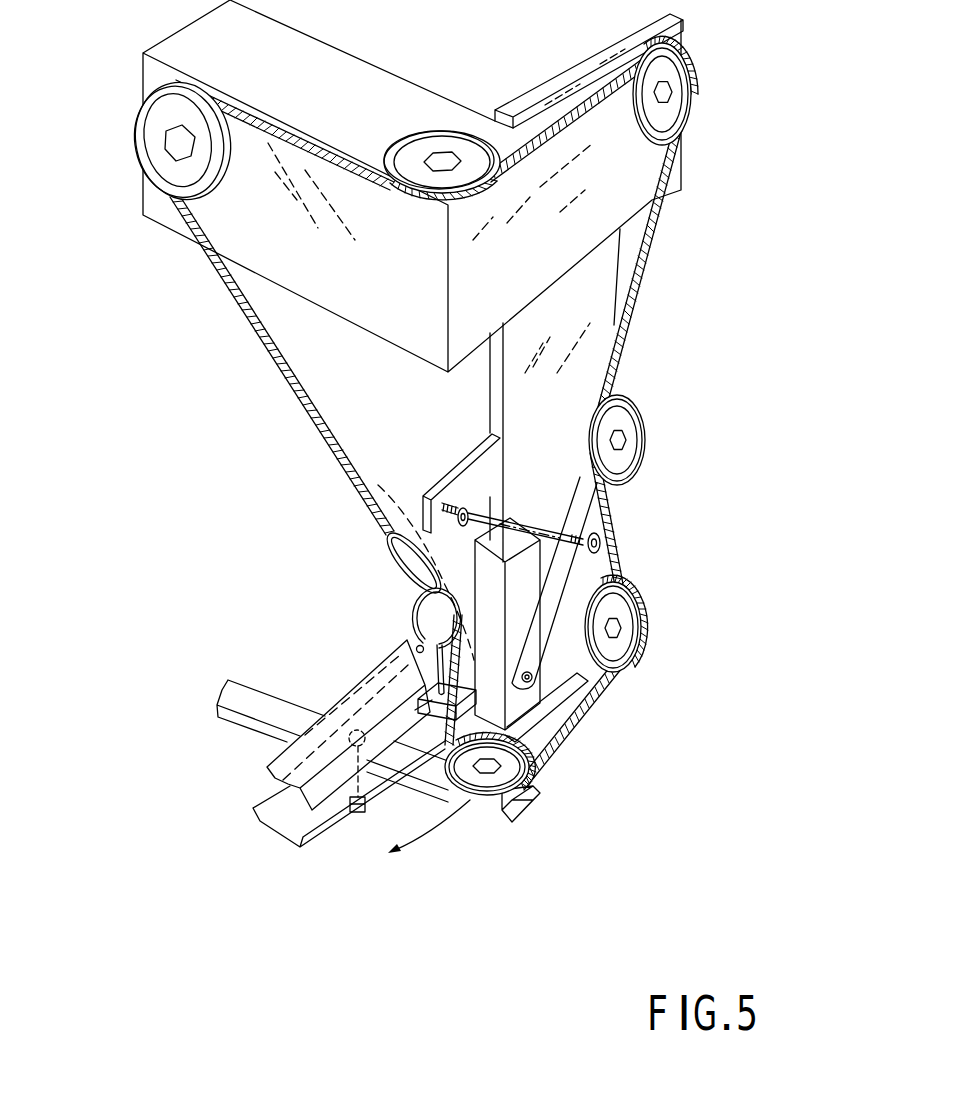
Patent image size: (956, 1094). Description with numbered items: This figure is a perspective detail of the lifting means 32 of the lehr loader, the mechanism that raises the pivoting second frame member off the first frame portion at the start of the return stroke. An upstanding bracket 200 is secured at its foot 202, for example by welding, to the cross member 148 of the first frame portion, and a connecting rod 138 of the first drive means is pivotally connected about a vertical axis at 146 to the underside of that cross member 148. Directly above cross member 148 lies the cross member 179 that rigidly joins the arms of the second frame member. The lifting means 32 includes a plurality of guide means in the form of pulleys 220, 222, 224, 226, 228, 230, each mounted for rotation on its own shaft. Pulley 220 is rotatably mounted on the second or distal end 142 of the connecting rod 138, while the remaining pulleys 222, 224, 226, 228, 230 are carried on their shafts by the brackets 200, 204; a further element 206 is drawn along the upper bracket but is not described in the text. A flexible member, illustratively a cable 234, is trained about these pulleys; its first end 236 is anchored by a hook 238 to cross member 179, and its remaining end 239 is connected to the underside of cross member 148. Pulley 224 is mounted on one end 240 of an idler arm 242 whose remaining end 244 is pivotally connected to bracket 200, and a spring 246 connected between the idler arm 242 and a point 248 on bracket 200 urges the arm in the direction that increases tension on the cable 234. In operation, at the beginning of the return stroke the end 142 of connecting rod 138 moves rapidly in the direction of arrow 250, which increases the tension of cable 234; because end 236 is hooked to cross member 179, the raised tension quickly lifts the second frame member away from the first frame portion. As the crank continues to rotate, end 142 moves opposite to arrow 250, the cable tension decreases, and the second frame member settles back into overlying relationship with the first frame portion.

The lifting means 32 is at (770, 105).
The connecting rod 138 is at (258, 700).
The second end of connecting rod 142 is at (538, 805).
The pivotal connection 146 is at (347, 747).
The cross member 148 is at (312, 826).
The cross member 179 is at (349, 707).
The upstanding bracket 200 is at (569, 455).
The foot 202 is at (530, 697).
The bracket 204 is at (536, 280).
The rail 206 is at (562, 80).
The pulley 220 is at (488, 790).
The pulley 222 is at (626, 630).
The pulley 224 is at (662, 454).
The pulley 226 is at (670, 104).
The pulley 228 is at (437, 148).
The pulley 230 is at (163, 152).
The cable 234 is at (623, 333).
The first end of cable 236 is at (388, 566).
The hook 238 is at (408, 637).
The remaining end of cable 239 is at (398, 522).
The end of idler arm 240 is at (618, 490).
The idler arm 242 is at (566, 580).
The remaining end of idler arm 244 is at (535, 668).
The spring 246 is at (514, 524).
The point on bracket 248 is at (445, 497).
The arrow 250 is at (412, 845).